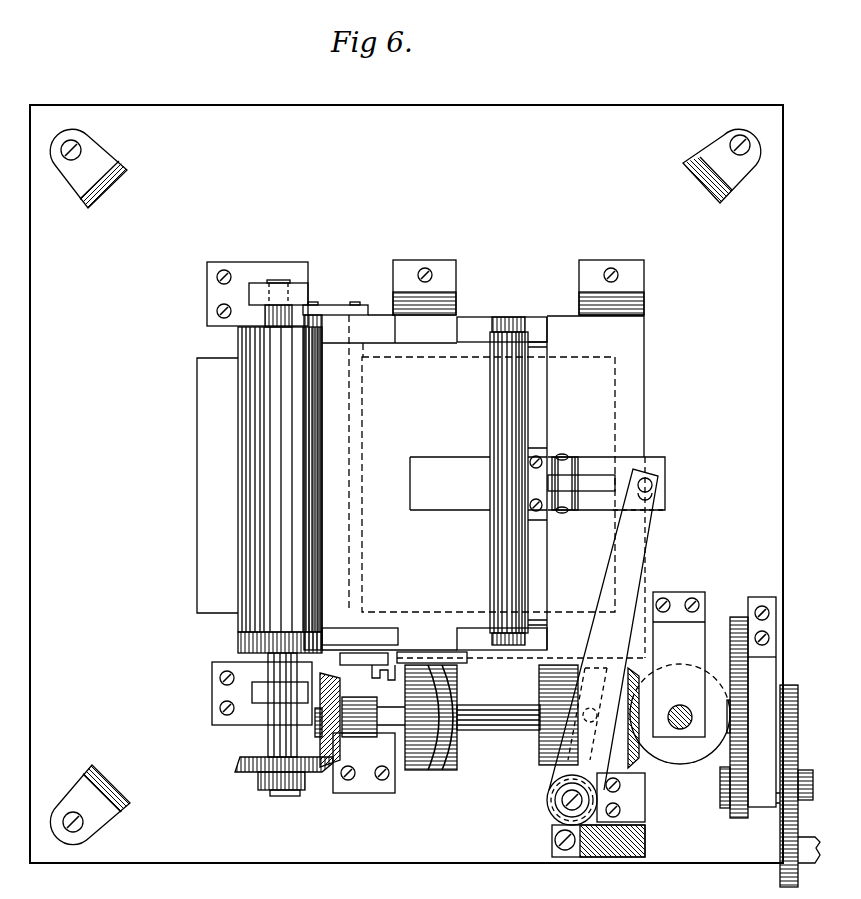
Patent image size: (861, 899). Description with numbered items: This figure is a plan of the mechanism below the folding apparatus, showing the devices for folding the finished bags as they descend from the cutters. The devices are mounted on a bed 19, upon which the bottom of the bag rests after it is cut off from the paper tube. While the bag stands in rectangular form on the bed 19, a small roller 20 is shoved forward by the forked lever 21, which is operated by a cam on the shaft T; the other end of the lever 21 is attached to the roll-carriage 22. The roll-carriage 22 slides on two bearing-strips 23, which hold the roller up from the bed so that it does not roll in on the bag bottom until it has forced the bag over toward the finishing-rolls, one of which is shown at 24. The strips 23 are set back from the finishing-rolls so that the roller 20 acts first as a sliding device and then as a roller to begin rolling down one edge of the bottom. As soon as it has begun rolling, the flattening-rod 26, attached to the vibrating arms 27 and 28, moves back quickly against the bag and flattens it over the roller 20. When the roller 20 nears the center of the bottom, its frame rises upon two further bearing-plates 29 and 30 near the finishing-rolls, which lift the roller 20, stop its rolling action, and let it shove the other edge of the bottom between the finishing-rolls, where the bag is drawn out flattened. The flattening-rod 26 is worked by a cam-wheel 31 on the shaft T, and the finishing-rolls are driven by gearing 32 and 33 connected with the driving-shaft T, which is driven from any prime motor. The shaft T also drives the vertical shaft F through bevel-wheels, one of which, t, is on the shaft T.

The bed 19 is at (421, 489).
The small roller 20 is at (495, 418).
The forked lever 21 is at (602, 647).
The roll-carriage 22 is at (613, 483).
The bearing-strips 23 is at (502, 484).
The finishing-roll 24 is at (262, 496).
The flattening-rod 26 is at (313, 475).
The vibrating arm 27 is at (320, 306).
The vibrating arm 28 is at (342, 649).
The bearing-plate 29 is at (360, 635).
The bearing-plate 30 is at (389, 330).
The cam-wheel 31 is at (433, 771).
The gearing 32 is at (320, 740).
The gearing 33 is at (255, 772).
The vertical shaft F is at (696, 690).
The shaft T is at (528, 720).
The bevel-wheel t is at (660, 721).